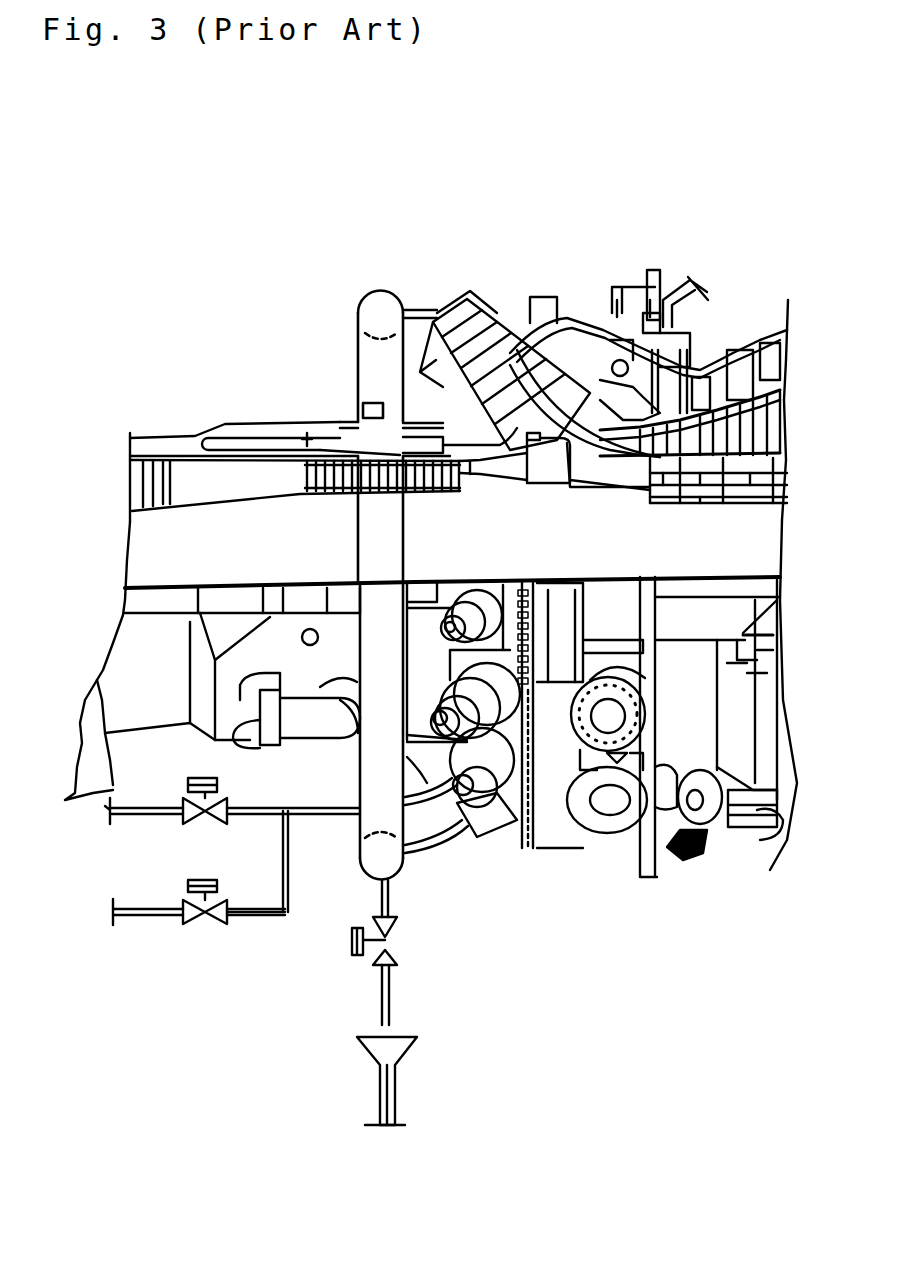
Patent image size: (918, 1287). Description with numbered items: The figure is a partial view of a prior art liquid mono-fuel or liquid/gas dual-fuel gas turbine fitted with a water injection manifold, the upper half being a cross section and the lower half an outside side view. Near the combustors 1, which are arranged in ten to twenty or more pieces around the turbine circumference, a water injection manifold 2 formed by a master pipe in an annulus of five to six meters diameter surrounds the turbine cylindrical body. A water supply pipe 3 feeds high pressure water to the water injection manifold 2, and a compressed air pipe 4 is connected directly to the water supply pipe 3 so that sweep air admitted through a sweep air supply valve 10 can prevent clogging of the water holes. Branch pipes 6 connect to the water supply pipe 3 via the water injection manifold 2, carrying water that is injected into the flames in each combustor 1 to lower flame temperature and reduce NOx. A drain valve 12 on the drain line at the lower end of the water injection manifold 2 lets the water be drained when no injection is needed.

The combustor 1 is at (478, 305).
The water injection manifold 2 is at (372, 290).
The water supply pipe 3 is at (142, 823).
The compressed air pipe 4 is at (137, 925).
The branch pipe 6 is at (418, 305).
The sweep air supply valve 10 is at (210, 927).
The drain valve 12 is at (392, 950).